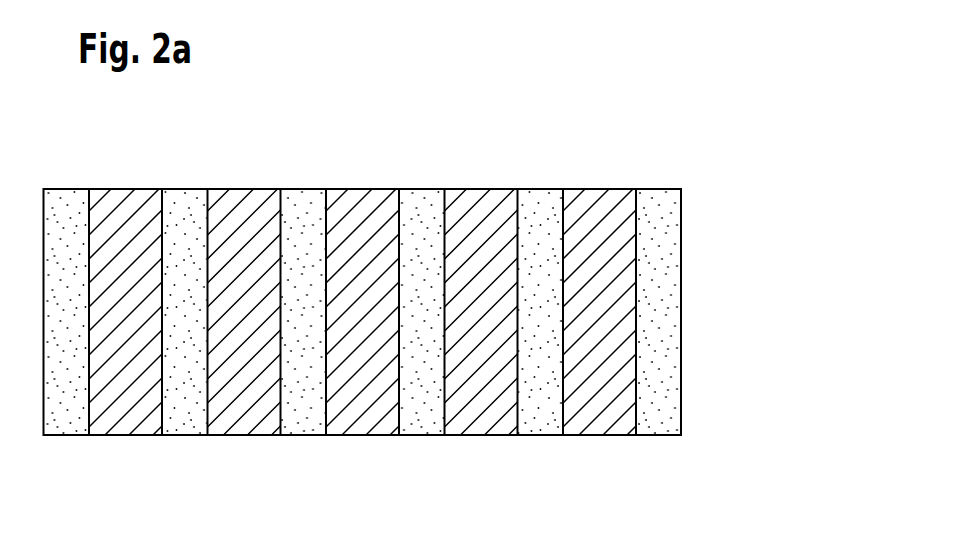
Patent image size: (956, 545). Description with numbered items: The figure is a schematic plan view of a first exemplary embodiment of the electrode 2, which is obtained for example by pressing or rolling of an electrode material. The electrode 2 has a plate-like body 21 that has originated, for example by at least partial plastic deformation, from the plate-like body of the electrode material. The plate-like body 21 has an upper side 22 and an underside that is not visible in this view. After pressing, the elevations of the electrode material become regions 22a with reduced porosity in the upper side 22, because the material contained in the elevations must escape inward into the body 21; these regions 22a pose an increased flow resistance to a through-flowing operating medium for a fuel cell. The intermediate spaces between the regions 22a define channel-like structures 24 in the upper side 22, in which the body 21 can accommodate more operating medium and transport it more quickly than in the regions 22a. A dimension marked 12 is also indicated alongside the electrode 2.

The electrode 2 is at (670, 148).
The plate-like body 21 is at (681, 363).
The upper side 22 is at (590, 243).
The regions with reduced porosity 22a is at (125, 197).
The channel-like structures 24 is at (66, 428).
The period thickness 12 is at (812, 202).